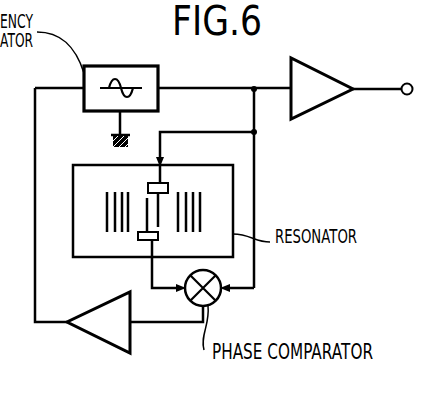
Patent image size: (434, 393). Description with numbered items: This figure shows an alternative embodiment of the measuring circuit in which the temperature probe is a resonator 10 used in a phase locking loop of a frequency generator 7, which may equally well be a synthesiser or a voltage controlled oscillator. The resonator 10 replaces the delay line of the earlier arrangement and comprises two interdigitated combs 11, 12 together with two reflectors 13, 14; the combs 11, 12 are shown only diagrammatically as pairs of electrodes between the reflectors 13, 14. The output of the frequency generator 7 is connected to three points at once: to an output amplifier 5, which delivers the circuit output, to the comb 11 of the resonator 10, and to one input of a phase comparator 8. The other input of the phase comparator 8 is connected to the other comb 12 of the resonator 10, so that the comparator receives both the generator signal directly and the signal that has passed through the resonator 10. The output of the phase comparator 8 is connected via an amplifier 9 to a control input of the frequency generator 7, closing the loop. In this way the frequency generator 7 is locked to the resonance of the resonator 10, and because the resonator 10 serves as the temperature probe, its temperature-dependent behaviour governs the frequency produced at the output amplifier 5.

The output amplifier 5 is at (313, 89).
The frequency generator 7 is at (115, 72).
The phase comparator 8 is at (215, 300).
The amplifier 9 is at (97, 320).
The resonator 10 is at (90, 165).
The comb 11 is at (168, 188).
The comb 12 is at (138, 240).
The reflector 13 is at (107, 210).
The reflector 14 is at (200, 213).